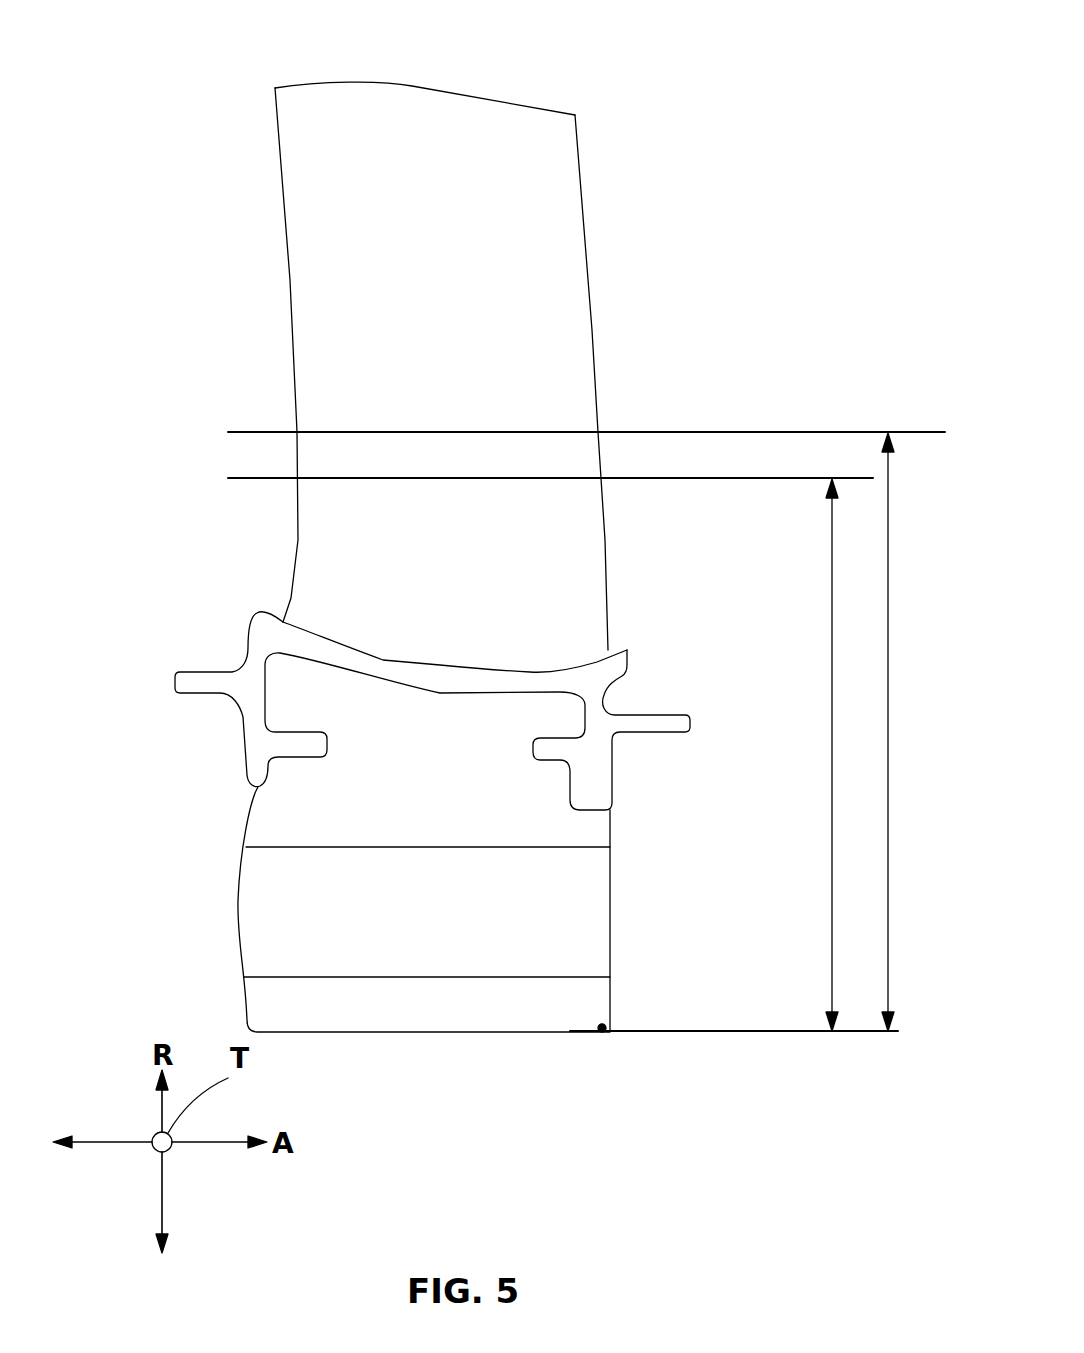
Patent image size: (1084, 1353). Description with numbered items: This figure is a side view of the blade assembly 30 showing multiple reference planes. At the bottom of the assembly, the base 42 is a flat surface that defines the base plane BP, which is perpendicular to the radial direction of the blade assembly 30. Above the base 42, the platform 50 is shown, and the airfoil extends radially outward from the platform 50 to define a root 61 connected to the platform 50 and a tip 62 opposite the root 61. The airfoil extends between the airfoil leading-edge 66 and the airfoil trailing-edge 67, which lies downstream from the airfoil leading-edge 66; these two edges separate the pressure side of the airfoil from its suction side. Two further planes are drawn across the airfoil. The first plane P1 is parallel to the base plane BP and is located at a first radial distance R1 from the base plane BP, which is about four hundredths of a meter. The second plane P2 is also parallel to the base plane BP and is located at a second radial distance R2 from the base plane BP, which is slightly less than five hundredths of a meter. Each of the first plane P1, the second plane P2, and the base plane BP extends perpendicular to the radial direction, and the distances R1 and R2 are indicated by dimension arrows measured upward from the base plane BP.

The blade assembly 30 is at (283, 56).
The base 42 is at (420, 1032).
The platform 50 is at (215, 677).
The root 61 is at (385, 658).
The tip 62 is at (412, 86).
The airfoil leading-edge 66 is at (292, 368).
The airfoil trailing-edge 67 is at (578, 158).
The first plane P1 is at (262, 480).
The second plane P2 is at (817, 430).
The base plane BP is at (695, 1030).
The first radial distance R1 is at (810, 755).
The second radial distance R2 is at (909, 732).